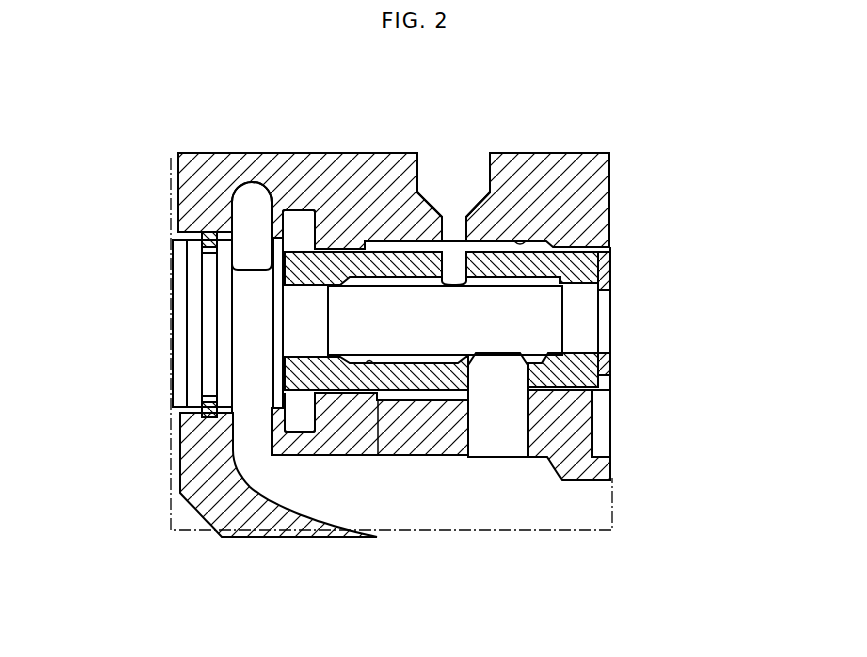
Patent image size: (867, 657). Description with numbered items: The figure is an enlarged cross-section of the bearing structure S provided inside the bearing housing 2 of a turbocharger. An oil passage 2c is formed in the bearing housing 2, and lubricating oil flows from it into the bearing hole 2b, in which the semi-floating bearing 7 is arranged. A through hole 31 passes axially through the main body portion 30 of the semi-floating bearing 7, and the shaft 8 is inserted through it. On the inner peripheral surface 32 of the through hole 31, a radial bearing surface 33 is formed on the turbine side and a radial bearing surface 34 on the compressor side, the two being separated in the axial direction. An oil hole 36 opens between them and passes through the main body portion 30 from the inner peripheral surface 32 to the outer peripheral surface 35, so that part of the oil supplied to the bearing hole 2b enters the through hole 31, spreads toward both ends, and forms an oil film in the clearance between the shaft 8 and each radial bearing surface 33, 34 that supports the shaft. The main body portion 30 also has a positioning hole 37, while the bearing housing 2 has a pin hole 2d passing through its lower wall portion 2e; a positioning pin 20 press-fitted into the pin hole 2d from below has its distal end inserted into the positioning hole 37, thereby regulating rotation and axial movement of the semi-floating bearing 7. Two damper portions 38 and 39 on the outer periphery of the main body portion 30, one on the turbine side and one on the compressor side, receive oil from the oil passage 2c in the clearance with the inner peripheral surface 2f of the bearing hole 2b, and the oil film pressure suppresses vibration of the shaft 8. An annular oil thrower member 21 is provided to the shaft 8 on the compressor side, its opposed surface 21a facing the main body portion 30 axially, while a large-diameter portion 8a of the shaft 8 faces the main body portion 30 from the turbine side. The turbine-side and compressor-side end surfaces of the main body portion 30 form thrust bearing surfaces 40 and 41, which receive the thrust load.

The bearing structure S is at (84, 112).
The bearing housing 2 is at (178, 192).
The bearing hole 2b is at (518, 240).
The oil passage 2c is at (431, 173).
The pin hole 2d is at (470, 432).
The wall portion 2e is at (419, 457).
The inner peripheral surface 2f is at (547, 240).
The semi-floating bearing 7 is at (305, 246).
The shaft 8 is at (252, 263).
The large-diameter portion 8a is at (290, 212).
The positioning pin 20 is at (505, 427).
The oil thrower member 21 is at (612, 247).
The opposed surface 21a is at (593, 245).
The main body portion 30 is at (357, 398).
The through hole 31 is at (291, 445).
The inner peripheral surface 32 is at (379, 398).
The radial bearing surface 33 is at (180, 443).
The radial bearing surface 34 is at (613, 348).
The outer peripheral surface 35 is at (313, 394).
The oil hole 36 is at (442, 250).
The positioning hole 37 is at (524, 393).
The damper portion 38 is at (273, 410).
The damper portion 39 is at (594, 440).
The thrust bearing surface 40 is at (283, 353).
The thrust bearing surface 41 is at (613, 370).